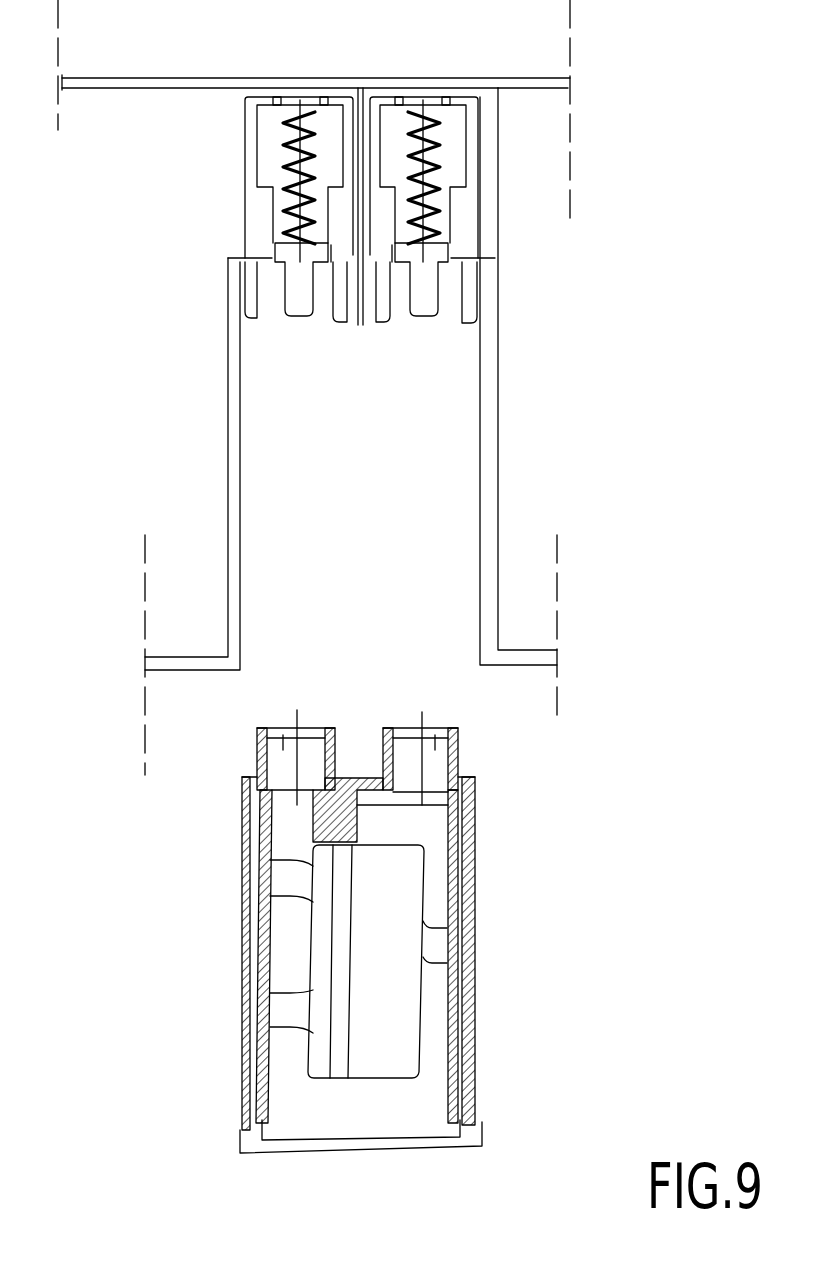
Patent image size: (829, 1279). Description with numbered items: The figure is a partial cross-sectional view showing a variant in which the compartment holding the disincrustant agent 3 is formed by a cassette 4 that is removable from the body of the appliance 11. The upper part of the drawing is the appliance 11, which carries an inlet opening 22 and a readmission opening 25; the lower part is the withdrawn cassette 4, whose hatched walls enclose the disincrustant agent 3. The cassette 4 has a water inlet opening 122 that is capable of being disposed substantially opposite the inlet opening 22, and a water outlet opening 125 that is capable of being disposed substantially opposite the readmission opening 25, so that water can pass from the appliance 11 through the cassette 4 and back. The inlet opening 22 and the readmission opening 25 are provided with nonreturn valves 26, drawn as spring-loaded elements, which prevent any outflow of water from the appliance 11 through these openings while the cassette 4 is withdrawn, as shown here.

The appliance 11 is at (572, 347).
The nonreturn valves 26 is at (272, 262).
The readmission opening 25 is at (268, 290).
The inlet opening 22 is at (452, 290).
The cassette 4 is at (547, 962).
The disincrustant agent 3 is at (385, 996).
The water outlet opening 125 is at (285, 727).
The water inlet opening 122 is at (433, 732).